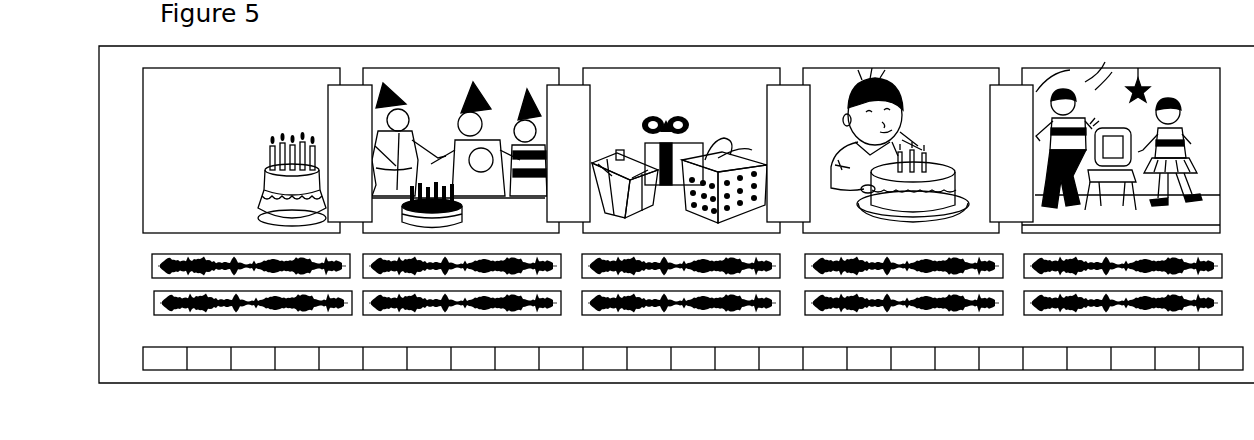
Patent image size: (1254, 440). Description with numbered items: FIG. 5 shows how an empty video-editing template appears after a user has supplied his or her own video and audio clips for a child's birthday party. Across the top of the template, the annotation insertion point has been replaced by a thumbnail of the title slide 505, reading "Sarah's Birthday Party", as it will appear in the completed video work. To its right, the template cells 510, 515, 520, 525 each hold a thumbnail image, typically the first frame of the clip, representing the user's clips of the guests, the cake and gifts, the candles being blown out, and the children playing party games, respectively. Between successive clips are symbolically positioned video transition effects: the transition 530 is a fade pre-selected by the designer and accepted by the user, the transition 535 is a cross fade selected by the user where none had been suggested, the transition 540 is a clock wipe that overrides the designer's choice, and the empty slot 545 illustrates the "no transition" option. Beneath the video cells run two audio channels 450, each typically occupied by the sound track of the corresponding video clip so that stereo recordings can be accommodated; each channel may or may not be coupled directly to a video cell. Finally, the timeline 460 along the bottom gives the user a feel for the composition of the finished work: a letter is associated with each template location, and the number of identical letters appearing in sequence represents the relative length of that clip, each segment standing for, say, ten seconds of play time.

The title slide 505 is at (262, 68).
The template cell 510 is at (488, 68).
The template cell 515 is at (715, 68).
The template cell 520 is at (943, 68).
The template cell 525 is at (1170, 68).
The transition 530 is at (350, 85).
The transition 535 is at (568, 85).
The transition 540 is at (788, 85).
The transition 545 is at (1010, 85).
The audio channels 450 is at (160, 257).
The timeline 460 is at (160, 348).